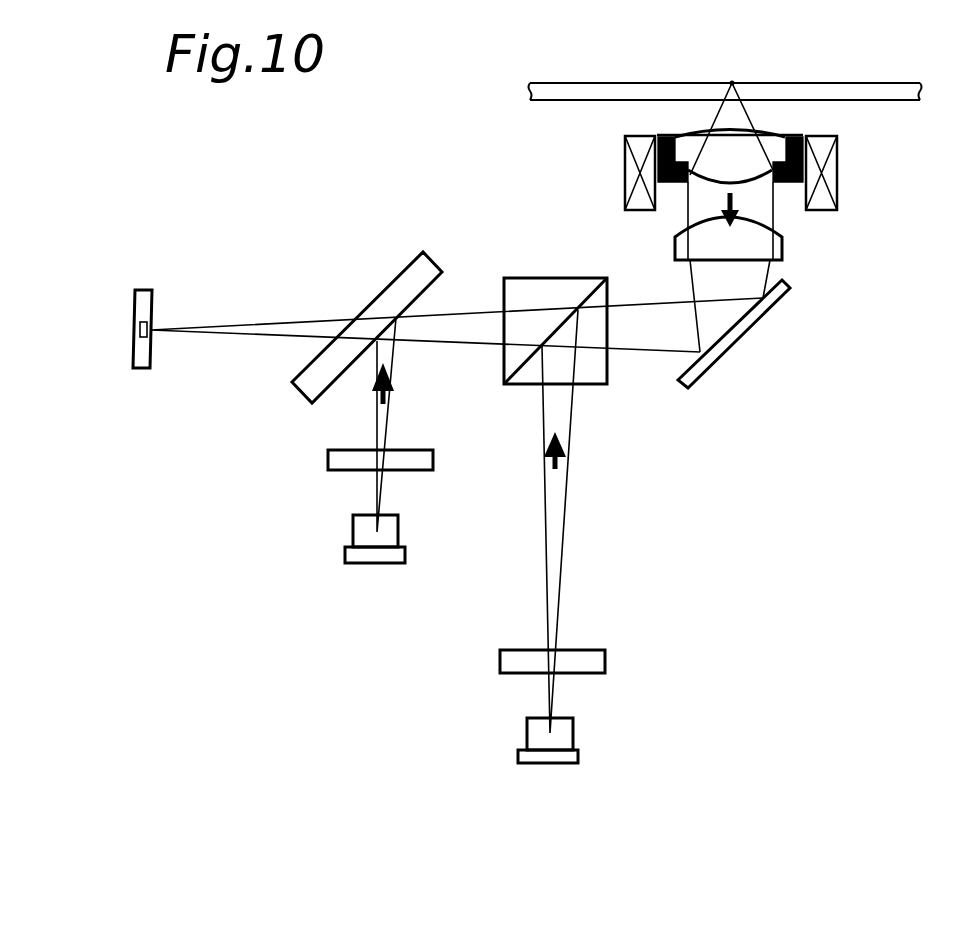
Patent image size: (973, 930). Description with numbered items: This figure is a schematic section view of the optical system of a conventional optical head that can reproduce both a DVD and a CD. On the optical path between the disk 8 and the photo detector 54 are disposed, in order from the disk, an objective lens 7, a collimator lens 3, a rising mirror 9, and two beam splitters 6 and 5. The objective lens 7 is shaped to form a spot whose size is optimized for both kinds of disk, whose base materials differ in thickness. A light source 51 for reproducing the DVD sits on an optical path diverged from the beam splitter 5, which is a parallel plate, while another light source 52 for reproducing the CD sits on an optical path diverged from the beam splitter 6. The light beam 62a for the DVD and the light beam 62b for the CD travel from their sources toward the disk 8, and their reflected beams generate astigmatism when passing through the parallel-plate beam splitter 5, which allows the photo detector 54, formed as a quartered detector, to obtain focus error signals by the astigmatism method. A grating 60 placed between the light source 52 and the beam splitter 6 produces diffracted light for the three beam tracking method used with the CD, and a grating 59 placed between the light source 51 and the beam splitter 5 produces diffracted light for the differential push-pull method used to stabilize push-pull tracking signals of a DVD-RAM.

The collimator lens 3 is at (782, 240).
The beam splitter 5 is at (398, 272).
The beam splitter 6 is at (527, 310).
The objective lens 7 is at (690, 145).
The disk 8 is at (550, 83).
The rising mirror 9 is at (763, 325).
The light source 51 is at (350, 573).
The light source 52 is at (565, 755).
The photo detector 54 is at (153, 302).
The grating 59 is at (335, 473).
The grating 60 is at (607, 648).
The light beam 62a is at (370, 402).
The light beam 62b is at (573, 473).